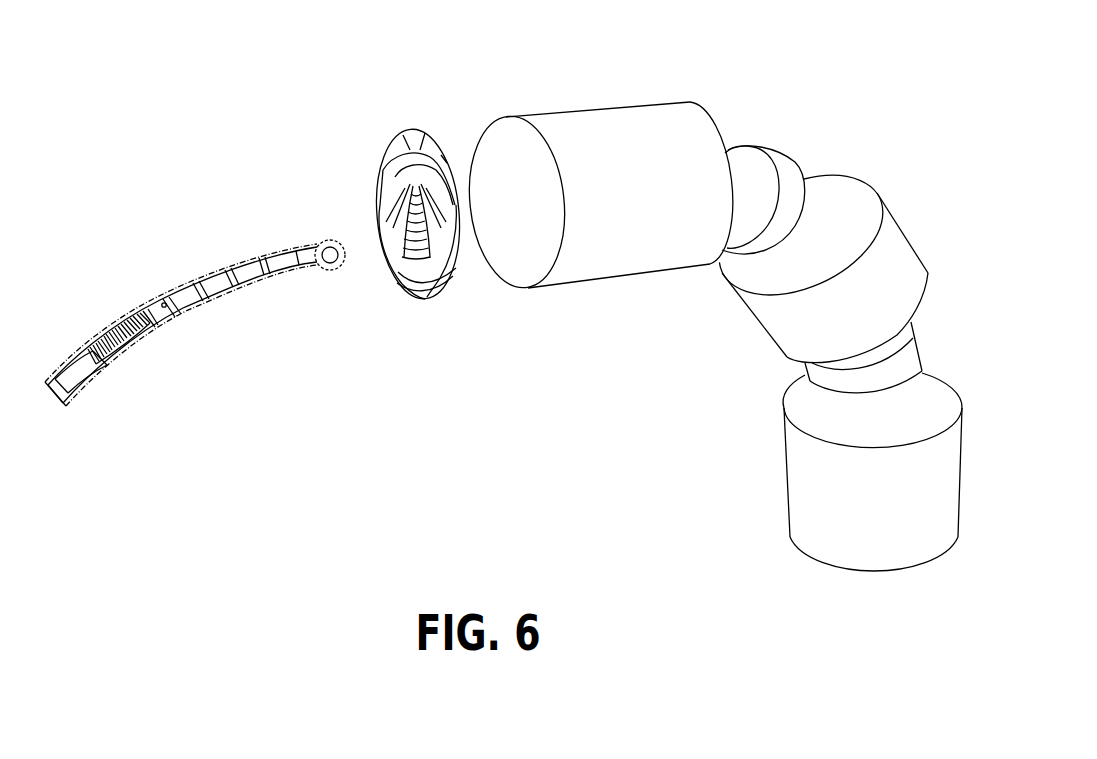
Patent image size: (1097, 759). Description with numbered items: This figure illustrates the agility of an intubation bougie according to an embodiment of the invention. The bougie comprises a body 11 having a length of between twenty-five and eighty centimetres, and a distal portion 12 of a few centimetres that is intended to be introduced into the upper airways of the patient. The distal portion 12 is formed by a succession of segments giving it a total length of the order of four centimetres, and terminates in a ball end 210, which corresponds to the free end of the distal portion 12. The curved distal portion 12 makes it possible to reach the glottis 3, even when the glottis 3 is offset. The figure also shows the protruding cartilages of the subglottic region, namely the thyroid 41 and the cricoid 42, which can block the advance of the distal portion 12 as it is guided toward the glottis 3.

The glottis 3 is at (431, 263).
The body 11 is at (121, 383).
The distal portion 12 is at (243, 305).
The ball end 210 is at (310, 230).
The thyroid 41 is at (598, 132).
The cricoid 42 is at (749, 167).